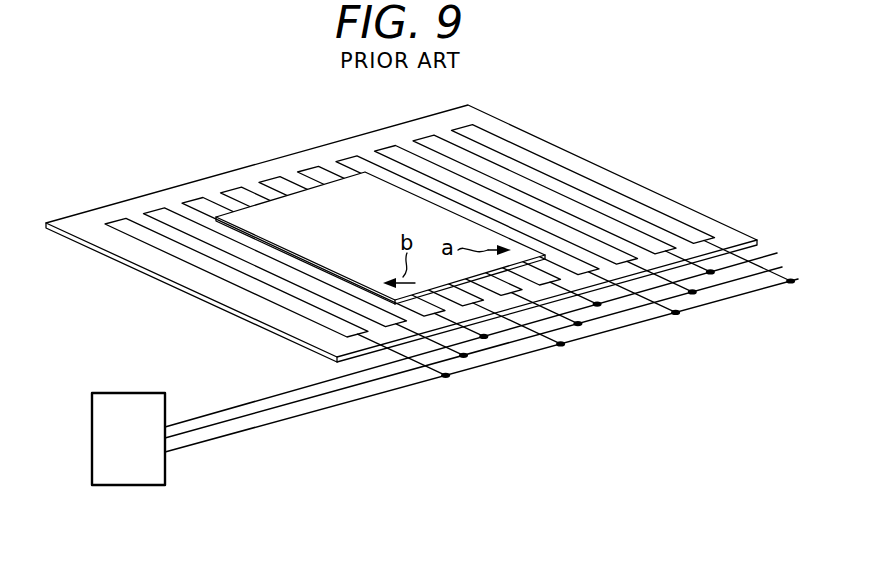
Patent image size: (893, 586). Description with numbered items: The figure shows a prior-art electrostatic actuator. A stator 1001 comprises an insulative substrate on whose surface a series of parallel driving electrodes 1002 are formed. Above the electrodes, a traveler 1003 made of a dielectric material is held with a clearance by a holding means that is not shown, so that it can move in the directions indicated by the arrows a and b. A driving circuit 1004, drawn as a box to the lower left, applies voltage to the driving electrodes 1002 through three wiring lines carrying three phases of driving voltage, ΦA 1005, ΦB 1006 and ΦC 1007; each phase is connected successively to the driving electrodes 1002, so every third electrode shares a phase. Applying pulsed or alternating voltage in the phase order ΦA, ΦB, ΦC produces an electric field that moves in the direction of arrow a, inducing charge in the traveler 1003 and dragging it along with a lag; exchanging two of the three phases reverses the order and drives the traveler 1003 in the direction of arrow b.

The stator 1001 is at (290, 167).
The driving electrodes 1002 is at (428, 141).
The traveler 1003 is at (290, 208).
The driving circuit 1004 is at (140, 393).
The phase ΦA driving voltage 1005 is at (280, 394).
The phase ΦB driving voltage 1006 is at (300, 403).
The phase ΦC driving voltage 1007 is at (345, 404).